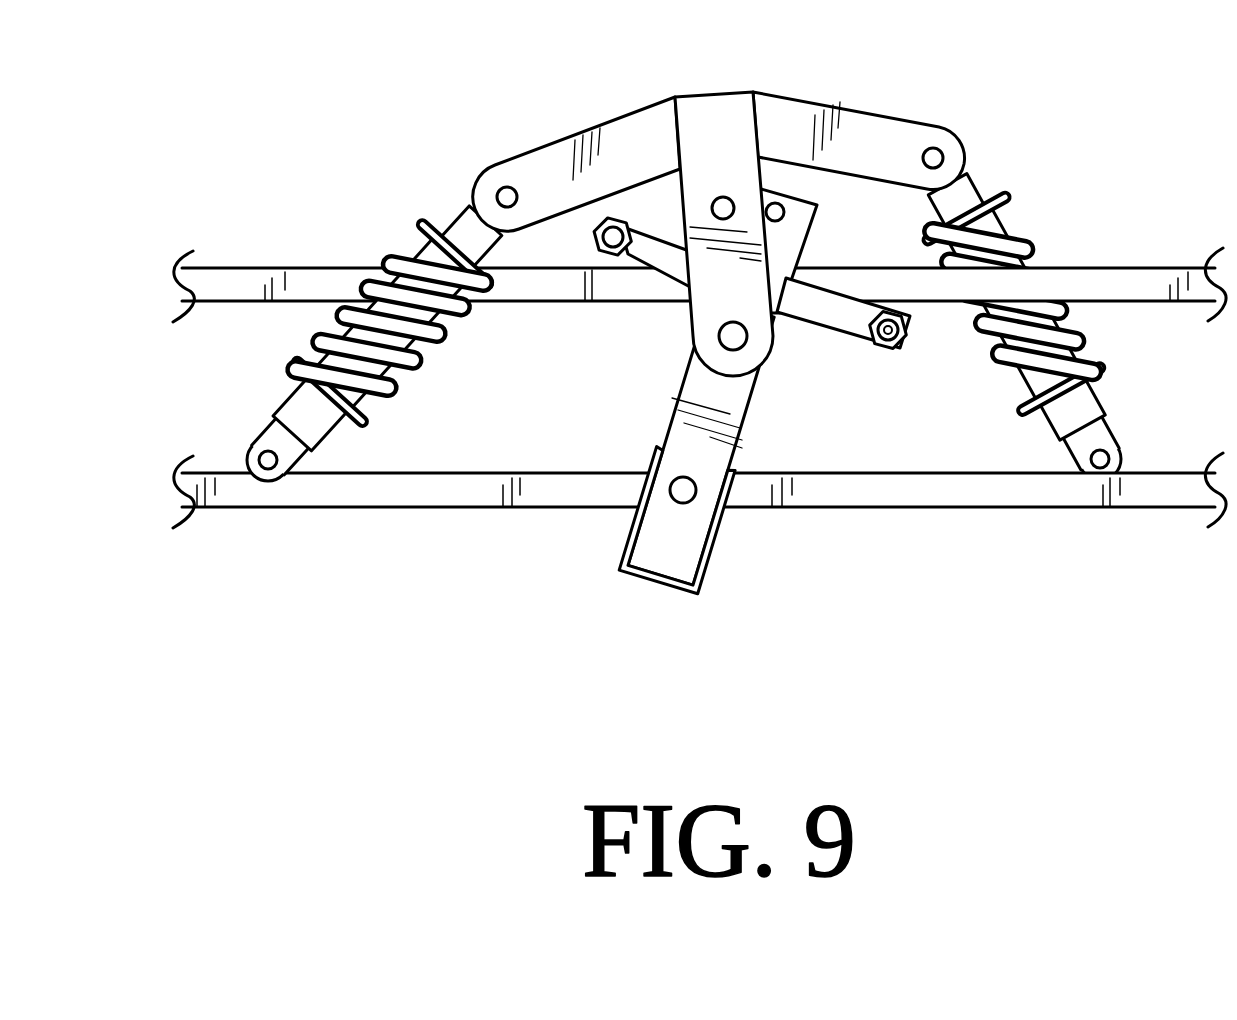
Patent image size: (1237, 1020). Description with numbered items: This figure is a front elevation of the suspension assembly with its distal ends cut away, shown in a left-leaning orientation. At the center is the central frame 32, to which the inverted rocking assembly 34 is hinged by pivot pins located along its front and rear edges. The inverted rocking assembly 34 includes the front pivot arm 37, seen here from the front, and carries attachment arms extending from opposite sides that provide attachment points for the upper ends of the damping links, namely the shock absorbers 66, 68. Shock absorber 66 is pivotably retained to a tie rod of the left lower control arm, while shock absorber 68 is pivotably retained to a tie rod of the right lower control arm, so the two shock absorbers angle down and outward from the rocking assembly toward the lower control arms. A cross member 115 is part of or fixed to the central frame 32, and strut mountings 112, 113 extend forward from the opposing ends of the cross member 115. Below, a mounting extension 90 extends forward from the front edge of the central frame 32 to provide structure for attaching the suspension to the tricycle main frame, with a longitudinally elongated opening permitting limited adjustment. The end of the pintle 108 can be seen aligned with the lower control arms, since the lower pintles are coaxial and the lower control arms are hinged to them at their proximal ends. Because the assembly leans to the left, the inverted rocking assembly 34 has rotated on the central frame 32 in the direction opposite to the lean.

The central frame 32 is at (785, 240).
The inverted rocking assembly 34 is at (717, 118).
The front pivot arm 37 is at (697, 190).
The shock absorber 66 is at (1020, 220).
The shock absorber 68 is at (410, 240).
The mounting extension 90 is at (700, 537).
The pintle 108 is at (690, 495).
The strut mounting 112 is at (628, 250).
The strut mounting 113 is at (907, 337).
The cross member 115 is at (817, 320).